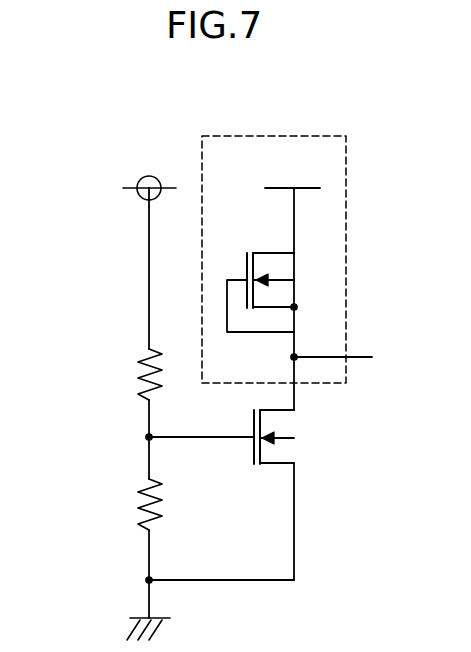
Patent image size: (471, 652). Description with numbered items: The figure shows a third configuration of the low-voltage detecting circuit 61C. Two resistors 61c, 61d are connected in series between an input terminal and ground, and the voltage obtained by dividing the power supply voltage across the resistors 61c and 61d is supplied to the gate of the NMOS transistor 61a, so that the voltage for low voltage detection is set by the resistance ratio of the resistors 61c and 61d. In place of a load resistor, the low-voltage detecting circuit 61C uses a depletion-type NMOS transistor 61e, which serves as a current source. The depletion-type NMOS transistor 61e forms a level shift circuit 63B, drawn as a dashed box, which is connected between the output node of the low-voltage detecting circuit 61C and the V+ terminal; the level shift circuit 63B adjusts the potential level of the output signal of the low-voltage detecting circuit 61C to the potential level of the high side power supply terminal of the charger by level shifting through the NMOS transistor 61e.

The low-voltage detecting circuit 61C is at (78, 157).
The level shift circuit 63B is at (287, 133).
The depletion-type NMOS transistor 61e is at (245, 264).
The NMOS transistor 61a is at (253, 448).
The resistor 61c is at (150, 351).
The resistor 61d is at (150, 481).